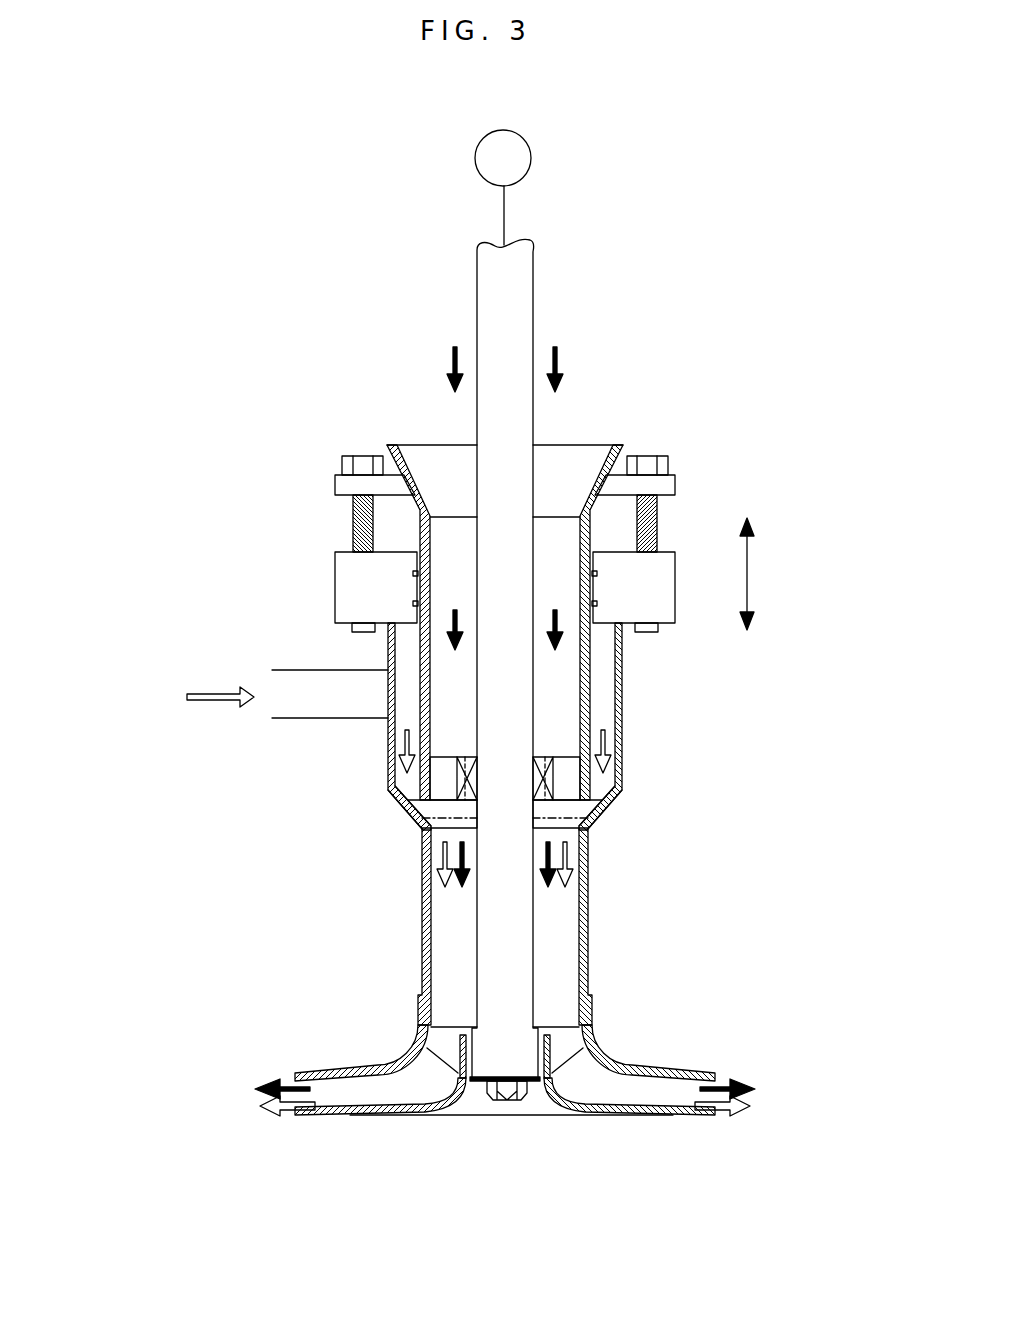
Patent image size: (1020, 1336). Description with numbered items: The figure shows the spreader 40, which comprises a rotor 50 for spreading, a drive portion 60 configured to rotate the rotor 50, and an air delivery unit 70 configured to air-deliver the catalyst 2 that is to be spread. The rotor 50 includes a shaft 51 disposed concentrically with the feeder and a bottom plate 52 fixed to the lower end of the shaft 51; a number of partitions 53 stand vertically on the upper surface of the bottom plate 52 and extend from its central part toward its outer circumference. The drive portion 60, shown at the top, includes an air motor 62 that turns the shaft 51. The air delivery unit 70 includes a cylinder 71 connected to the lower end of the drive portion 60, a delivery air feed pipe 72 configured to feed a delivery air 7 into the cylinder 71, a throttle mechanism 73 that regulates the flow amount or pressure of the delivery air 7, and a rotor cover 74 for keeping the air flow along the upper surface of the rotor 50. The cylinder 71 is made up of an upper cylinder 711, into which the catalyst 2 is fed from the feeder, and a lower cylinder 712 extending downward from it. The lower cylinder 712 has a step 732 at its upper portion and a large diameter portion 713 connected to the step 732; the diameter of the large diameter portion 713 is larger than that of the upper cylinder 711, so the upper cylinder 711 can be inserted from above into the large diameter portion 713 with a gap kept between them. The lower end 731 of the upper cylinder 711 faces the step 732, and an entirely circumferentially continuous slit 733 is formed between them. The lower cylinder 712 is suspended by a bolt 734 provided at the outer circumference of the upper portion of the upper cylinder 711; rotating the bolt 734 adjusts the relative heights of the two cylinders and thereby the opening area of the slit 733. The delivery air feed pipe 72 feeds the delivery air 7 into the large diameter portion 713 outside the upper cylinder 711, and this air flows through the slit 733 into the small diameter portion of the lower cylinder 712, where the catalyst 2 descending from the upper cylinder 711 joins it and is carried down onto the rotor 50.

The catalyst 2 is at (560, 366).
The delivery air 7 is at (212, 699).
The spreader 40 is at (340, 262).
The rotor 50 is at (420, 1178).
The shaft 51 is at (502, 968).
The bottom plate 52 is at (420, 1110).
The partitions 53 is at (450, 1082).
The drive portion 60 is at (537, 112).
The air motor 62 is at (531, 158).
The air delivery unit 70 is at (232, 657).
The cylinder 71 is at (735, 690).
The upper cylinder 711 is at (590, 688).
The lower cylinder 712 is at (590, 895).
The large diameter portion 713 is at (623, 745).
The delivery air feed pipe 72 is at (291, 670).
The throttle mechanism 73 is at (352, 798).
The lower end 731 is at (600, 800).
The step 732 is at (586, 812).
The slit 733 is at (423, 812).
The bolt 734 is at (335, 480).
The rotor cover 74 is at (697, 1070).